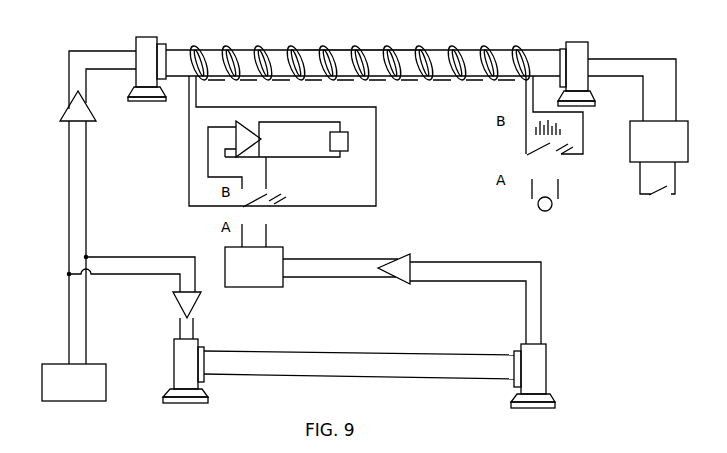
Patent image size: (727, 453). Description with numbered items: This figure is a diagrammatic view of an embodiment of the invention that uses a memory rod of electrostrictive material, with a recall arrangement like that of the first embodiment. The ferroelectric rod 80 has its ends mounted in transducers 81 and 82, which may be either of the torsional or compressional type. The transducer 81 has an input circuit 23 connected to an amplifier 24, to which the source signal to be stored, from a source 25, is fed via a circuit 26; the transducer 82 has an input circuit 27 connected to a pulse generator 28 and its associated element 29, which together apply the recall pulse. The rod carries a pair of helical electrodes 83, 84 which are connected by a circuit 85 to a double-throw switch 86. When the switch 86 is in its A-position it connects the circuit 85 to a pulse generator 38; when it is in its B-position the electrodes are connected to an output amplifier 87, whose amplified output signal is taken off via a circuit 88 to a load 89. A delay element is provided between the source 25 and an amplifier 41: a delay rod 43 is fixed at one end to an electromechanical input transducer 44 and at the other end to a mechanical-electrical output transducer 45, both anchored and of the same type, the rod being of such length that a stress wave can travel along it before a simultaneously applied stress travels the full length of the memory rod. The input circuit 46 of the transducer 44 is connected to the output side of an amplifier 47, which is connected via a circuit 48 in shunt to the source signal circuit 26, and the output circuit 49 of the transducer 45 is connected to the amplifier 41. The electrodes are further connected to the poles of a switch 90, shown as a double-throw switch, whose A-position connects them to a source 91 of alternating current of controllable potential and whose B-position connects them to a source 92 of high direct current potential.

The input circuit 23 is at (112, 52).
The amplifier 24 is at (60, 117).
The source 25 is at (103, 378).
The circuit 26 is at (66, 208).
The input circuit 27 is at (625, 60).
The pulse generator 28 is at (685, 134).
The control element 29 is at (650, 196).
The pulse generator 38 is at (272, 248).
The amplifier 41 is at (396, 256).
The delay rod 43 is at (383, 354).
The input transducer 44 is at (190, 345).
The output transducer 45 is at (543, 365).
The input circuit 46 is at (176, 325).
The amplifier 47 is at (193, 300).
The circuit 48 is at (120, 258).
The output circuit 49 is at (538, 305).
The ferroelectric rod 80 is at (170, 52).
The transducer 81 is at (145, 38).
The transducer 82 is at (578, 42).
The helical electrode 83 is at (295, 46).
The helical electrode 84 is at (303, 52).
The circuit 85 is at (195, 100).
The double-throw switch 86 is at (283, 197).
The output amplifier 87 is at (232, 125).
The circuit 88 is at (314, 124).
The load 89 is at (341, 152).
The switch 90 is at (530, 156).
The source of alternating current 91 is at (548, 209).
The source of high direct current potential 92 is at (565, 126).